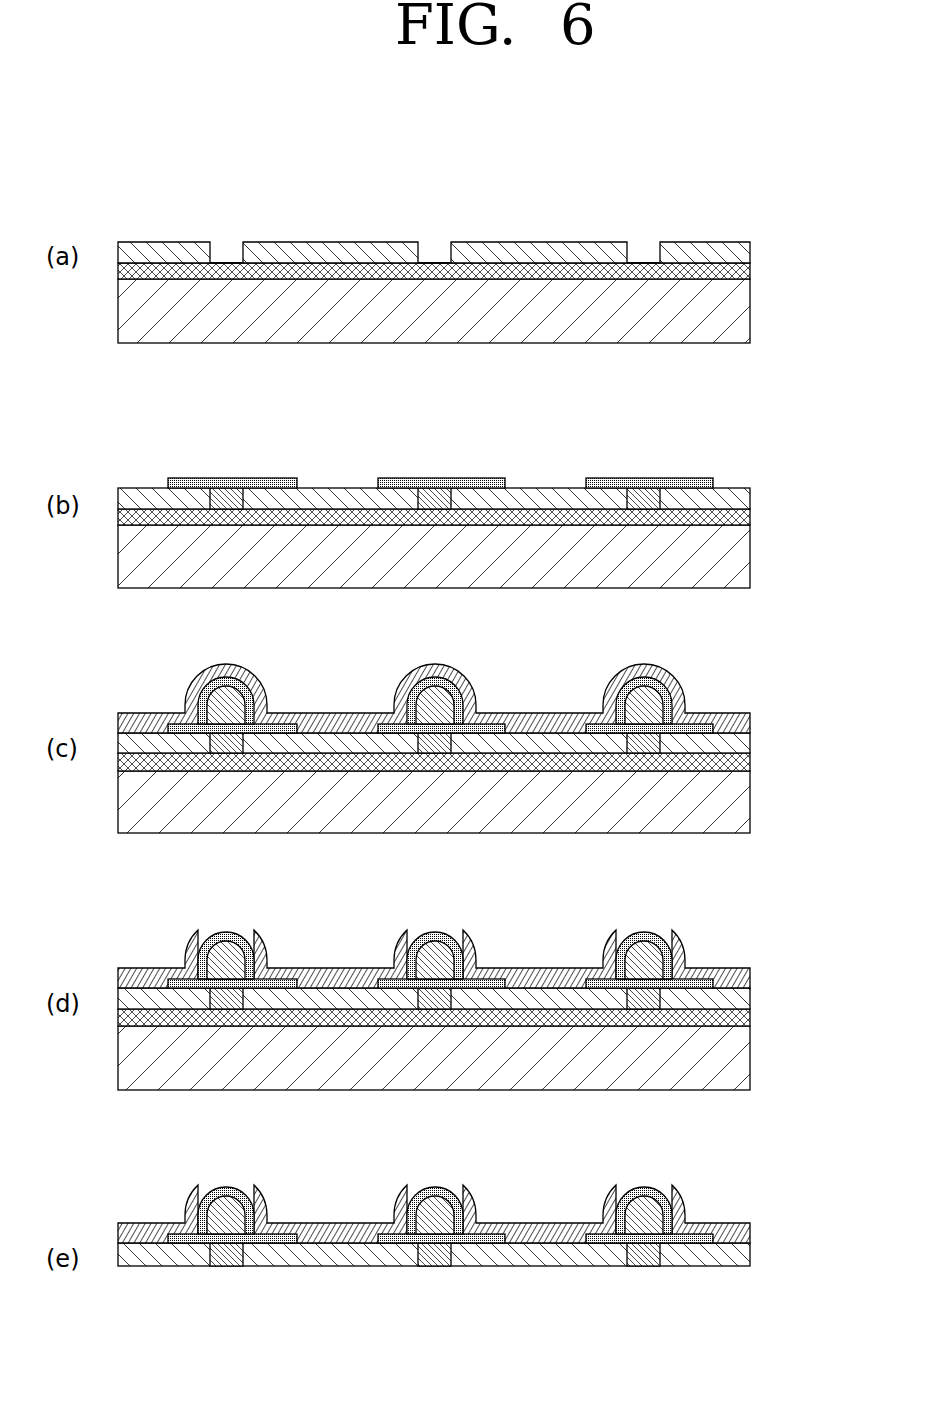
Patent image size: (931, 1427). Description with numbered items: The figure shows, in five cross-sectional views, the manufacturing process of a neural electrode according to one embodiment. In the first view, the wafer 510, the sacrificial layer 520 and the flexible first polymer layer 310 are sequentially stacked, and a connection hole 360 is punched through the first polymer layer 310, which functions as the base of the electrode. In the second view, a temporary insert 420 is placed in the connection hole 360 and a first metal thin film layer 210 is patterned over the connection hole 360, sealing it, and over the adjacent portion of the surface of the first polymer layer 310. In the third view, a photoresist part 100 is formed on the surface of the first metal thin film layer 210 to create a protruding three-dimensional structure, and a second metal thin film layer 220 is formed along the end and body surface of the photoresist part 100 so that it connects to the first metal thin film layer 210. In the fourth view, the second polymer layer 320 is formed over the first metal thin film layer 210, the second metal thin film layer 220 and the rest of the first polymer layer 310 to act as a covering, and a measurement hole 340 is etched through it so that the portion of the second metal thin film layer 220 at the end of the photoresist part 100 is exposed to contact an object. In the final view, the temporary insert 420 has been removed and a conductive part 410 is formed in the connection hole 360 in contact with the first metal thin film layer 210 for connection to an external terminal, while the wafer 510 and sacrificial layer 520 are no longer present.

The photoresist part 100 is at (655, 700).
The first metal thin film layer 210 is at (232, 478).
The second metal thin film layer 220 is at (427, 682).
The first polymer layer 310 is at (745, 253).
The second polymer layer 320 is at (333, 713).
The measurement hole 340 is at (232, 925).
The connection hole 360 is at (436, 252).
The conductive part 410 is at (428, 1267).
The temporary insert 420 is at (437, 495).
The wafer 510 is at (745, 311).
The sacrificial layer 520 is at (745, 268).